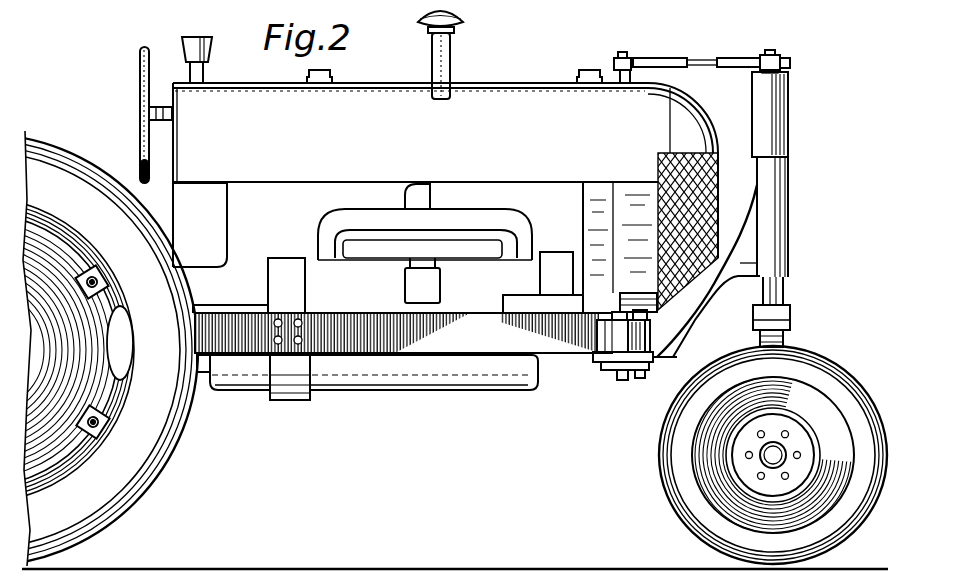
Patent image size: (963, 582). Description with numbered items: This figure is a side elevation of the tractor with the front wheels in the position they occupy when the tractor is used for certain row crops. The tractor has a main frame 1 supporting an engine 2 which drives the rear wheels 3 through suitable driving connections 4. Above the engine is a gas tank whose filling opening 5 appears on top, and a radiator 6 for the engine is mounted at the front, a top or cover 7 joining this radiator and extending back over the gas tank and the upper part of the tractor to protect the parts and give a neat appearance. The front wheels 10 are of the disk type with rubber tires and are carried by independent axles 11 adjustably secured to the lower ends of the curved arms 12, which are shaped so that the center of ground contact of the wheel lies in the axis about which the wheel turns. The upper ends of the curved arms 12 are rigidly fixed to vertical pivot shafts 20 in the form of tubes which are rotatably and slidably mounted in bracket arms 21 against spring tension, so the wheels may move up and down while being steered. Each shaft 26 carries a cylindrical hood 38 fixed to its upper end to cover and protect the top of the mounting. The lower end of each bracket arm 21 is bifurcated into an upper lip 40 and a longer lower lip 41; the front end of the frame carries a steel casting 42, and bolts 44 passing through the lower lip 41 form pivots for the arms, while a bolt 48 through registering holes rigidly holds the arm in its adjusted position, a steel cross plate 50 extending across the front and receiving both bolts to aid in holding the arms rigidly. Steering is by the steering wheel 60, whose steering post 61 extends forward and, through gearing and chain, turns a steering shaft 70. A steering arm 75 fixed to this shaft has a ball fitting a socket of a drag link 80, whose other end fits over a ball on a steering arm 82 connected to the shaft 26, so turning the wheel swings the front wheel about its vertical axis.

The main frame 1 is at (484, 341).
The engine 2 is at (382, 298).
The rear wheels 3 is at (174, 458).
The driving connections 4 is at (203, 378).
The filling opening 5 is at (333, 75).
The radiator 6 is at (694, 114).
The top or cover 7 is at (501, 83).
The front wheels 10 is at (685, 497).
The independent axles 11 is at (767, 463).
The curved arms 12 is at (790, 327).
The vertical pivot shafts 20 is at (789, 290).
The bracket arms 21 is at (699, 312).
The shaft 26 is at (771, 55).
The cylindrical hood 38 is at (789, 119).
The upper lip 40 is at (636, 318).
The lower lip 41 is at (644, 348).
The steel casting 42 is at (612, 340).
The bolts 44 is at (640, 372).
The bolt 48 is at (623, 374).
The steel cross plate 50 is at (612, 366).
The steering wheel 60 is at (140, 70).
The steering post 61 is at (158, 108).
The steering shaft 70 is at (633, 76).
The steering arm 75 is at (612, 63).
The drag link 80 is at (665, 57).
The steering arm 82 is at (788, 60).